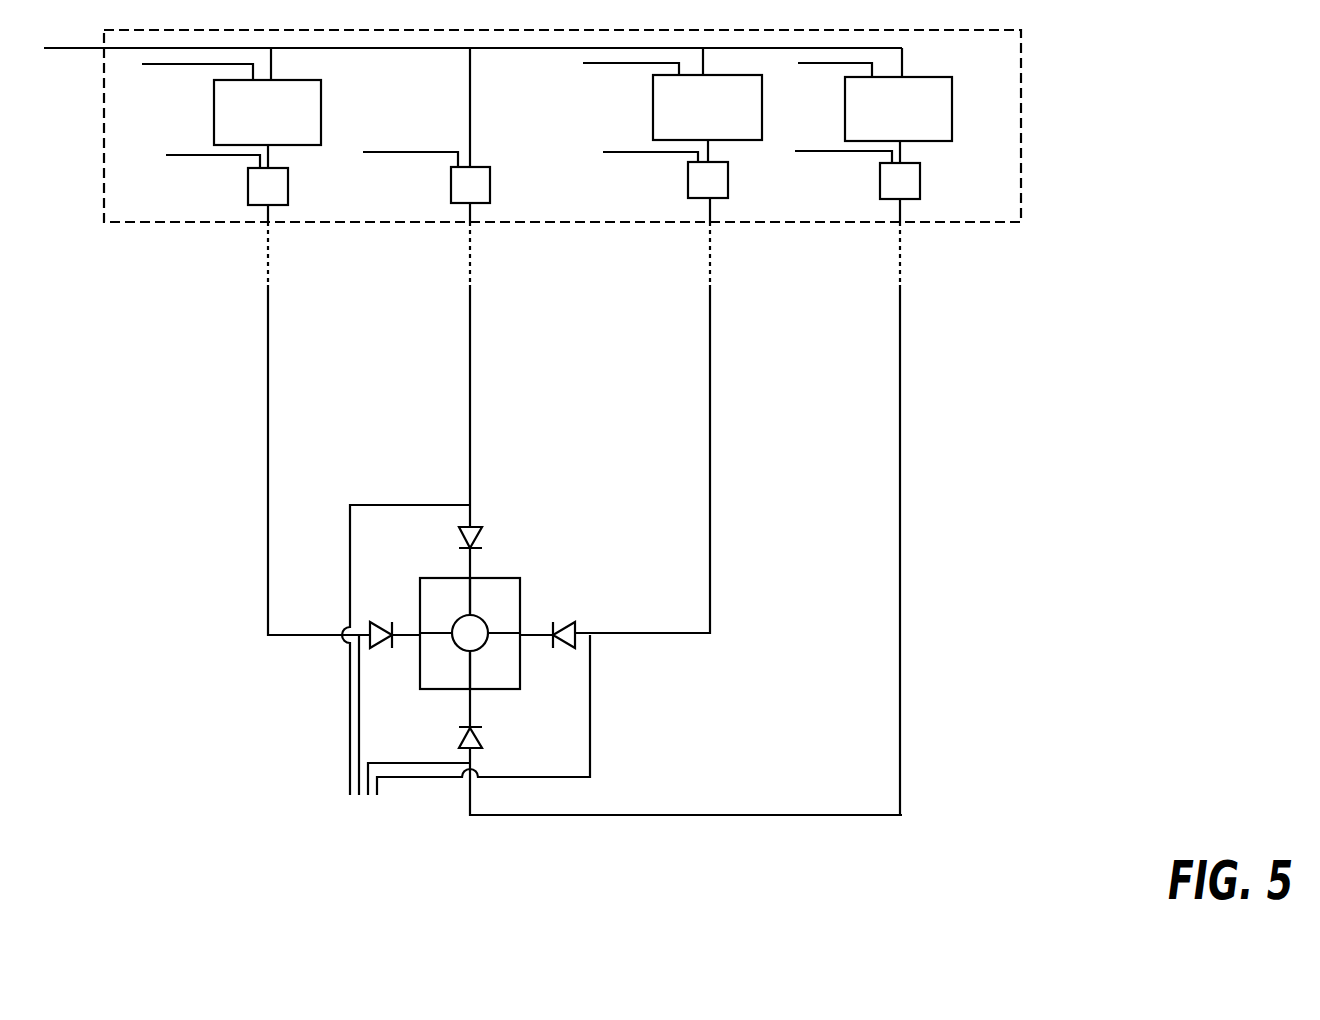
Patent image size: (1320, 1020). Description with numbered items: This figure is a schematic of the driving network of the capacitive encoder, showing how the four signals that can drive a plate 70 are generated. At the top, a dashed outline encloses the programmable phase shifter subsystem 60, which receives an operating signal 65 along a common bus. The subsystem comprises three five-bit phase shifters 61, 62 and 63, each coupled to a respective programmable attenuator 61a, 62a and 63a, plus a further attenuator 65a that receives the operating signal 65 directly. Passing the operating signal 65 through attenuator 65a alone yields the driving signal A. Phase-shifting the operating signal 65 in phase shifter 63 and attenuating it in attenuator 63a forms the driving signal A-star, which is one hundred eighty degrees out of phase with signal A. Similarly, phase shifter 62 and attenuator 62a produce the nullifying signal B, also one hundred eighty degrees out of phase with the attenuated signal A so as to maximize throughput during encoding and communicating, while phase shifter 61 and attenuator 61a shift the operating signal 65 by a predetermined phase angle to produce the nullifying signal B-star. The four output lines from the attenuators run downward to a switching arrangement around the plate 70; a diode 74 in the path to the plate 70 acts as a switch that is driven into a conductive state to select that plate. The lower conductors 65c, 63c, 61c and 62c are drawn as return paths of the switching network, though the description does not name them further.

The programmable phase shifter subsystem 60 is at (1022, 137).
The operating signal 65 is at (73, 48).
The phase shifter 63 is at (322, 113).
The programmable attenuator 63a is at (289, 188).
The attenuator 65a is at (491, 188).
The phase shifter 62 is at (763, 105).
The programmable attenuator 62a is at (729, 183).
The phase shifter 61 is at (953, 105).
The programmable attenuator 61a is at (921, 181).
The diode 74 is at (484, 522).
The plate 70 is at (509, 578).
The output line 65c is at (349, 725).
The output line 63c is at (361, 703).
The output line 61c is at (418, 763).
The output line 62c is at (591, 722).
The driving signal A is at (473, 434).
The nullifying signal B is at (713, 429).